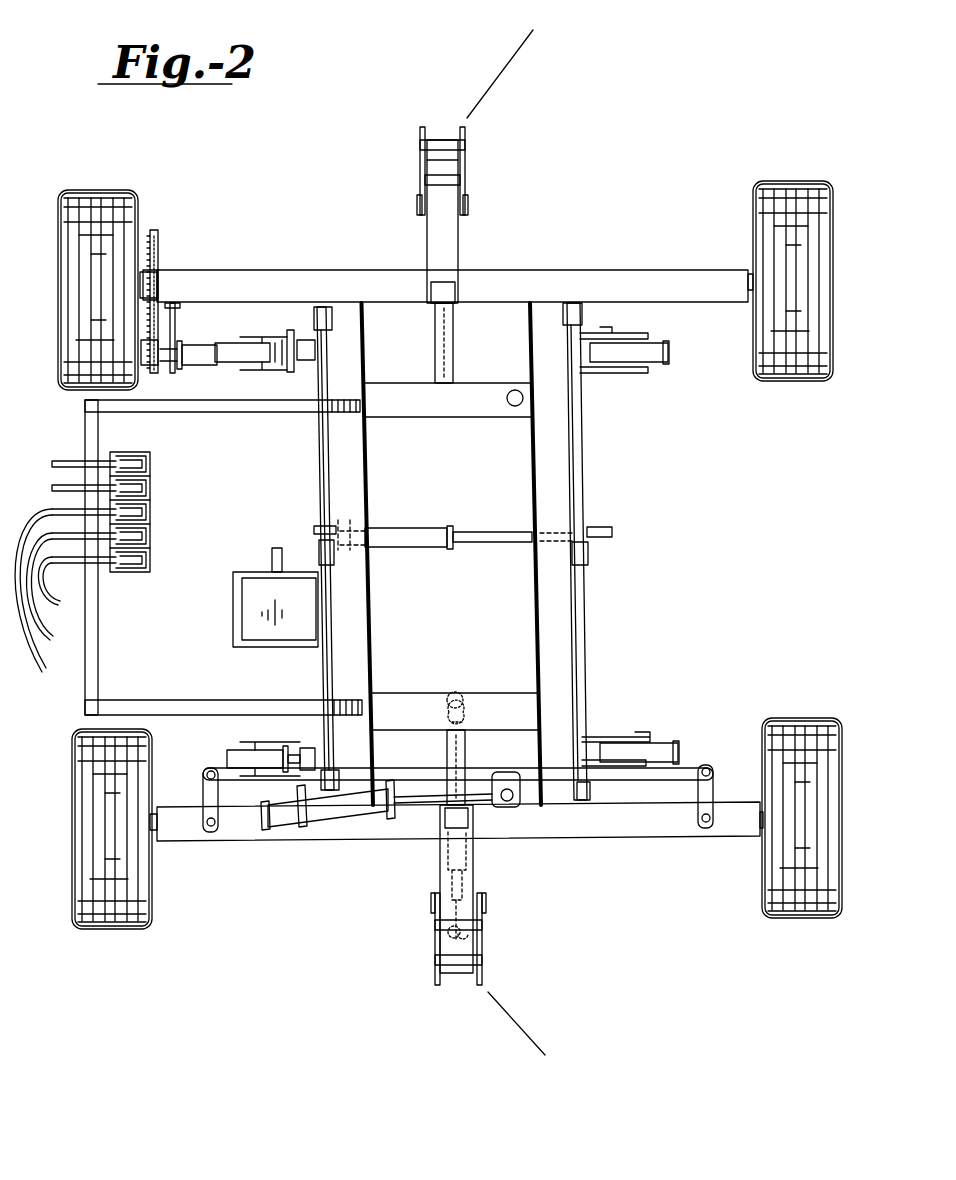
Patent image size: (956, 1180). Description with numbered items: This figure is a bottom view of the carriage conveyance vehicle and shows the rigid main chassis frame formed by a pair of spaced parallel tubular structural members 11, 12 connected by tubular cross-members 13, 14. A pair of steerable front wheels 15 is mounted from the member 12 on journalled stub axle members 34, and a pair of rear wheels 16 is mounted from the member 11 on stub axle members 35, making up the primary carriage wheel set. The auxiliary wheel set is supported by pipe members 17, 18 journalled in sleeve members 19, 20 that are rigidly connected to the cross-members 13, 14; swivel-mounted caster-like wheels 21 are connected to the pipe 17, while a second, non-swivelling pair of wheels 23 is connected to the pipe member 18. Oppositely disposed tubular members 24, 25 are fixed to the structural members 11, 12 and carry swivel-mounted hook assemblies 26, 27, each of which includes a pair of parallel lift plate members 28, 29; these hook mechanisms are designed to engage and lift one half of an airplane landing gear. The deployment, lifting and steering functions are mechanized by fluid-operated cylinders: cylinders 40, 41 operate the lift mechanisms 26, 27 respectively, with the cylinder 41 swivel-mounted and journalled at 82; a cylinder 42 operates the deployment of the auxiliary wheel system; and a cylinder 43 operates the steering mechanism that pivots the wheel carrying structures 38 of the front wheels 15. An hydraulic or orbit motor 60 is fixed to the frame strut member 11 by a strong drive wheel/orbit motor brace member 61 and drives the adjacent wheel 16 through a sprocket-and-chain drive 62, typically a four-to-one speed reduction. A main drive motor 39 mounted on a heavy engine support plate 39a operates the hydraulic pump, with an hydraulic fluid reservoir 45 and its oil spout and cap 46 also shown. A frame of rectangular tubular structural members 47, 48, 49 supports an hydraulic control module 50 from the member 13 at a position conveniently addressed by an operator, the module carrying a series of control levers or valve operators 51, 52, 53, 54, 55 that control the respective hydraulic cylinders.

The tubular structural member 11 is at (505, 290).
The tubular structural member 12 is at (553, 825).
The tubular structural cross-member 13 is at (371, 645).
The tubular structural cross-member 14 is at (533, 500).
The steerable front wheels 15 is at (122, 930).
The rear wheels 16 is at (110, 188).
The pipe member 17 is at (318, 465).
The pipe member 18 is at (583, 480).
The sleeve members 19 is at (316, 312).
The sleeve members 20 is at (580, 312).
The swivel-mounted wheels 21 is at (232, 340).
The second pair of wheels 23 is at (672, 352).
The tubular member 24 is at (460, 240).
The tubular member 25 is at (435, 855).
The hook assembly 26 is at (512, 61).
The hook assembly 27 is at (531, 1030).
The lift plate member 28 is at (490, 935).
The lift plate member 29 is at (432, 940).
The stub axle members 34 is at (155, 840).
The stub axle members 35 is at (153, 235).
The wheel carrying structures 38 is at (185, 832).
The main drive motor 39 is at (258, 585).
The engine support plate 39a is at (233, 585).
The cylinder 40 is at (435, 330).
The cylinder 41 is at (445, 745).
The cylinder 42 is at (405, 528).
The cylinder 43 is at (320, 835).
The hydraulic fluid reservoir 45 is at (398, 395).
The oil spout and cap 46 is at (510, 392).
The rectangular tubular structural member 47 is at (160, 412).
The rectangular tubular structural member 48 is at (92, 705).
The rectangular tubular structural member 49 is at (160, 700).
The hydraulic control module 50 is at (148, 572).
The control lever 51 is at (54, 461).
The control lever 52 is at (52, 488).
The control lever 53 is at (65, 598).
The control lever 54 is at (71, 589).
The control lever 55 is at (77, 584).
The orbit motor 60 is at (190, 366).
The drive wheel/orbit motor brace member 61 is at (176, 318).
The drive 62 is at (157, 265).
The journal 82 is at (487, 695).